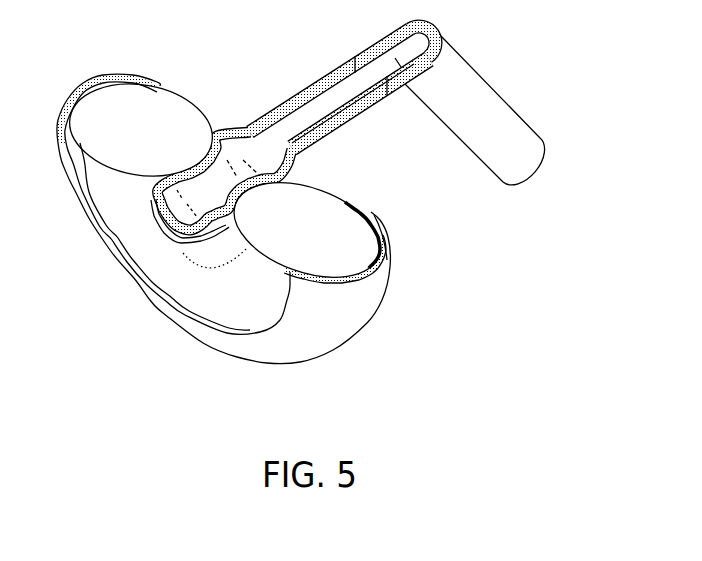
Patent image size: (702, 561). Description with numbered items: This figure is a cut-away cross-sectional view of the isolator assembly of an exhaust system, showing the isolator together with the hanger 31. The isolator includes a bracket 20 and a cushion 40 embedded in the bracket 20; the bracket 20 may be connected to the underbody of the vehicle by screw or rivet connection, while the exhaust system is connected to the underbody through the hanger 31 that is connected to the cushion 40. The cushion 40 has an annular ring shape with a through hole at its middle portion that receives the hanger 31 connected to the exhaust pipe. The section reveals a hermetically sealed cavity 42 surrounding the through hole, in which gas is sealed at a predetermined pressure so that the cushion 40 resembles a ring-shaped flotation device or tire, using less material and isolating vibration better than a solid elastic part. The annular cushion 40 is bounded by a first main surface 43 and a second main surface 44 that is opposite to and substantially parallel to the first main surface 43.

The bracket 20 is at (352, 317).
The hanger 31 is at (480, 102).
The cushion 40 is at (220, 303).
The hermetically sealed cavity 42 is at (153, 124).
The first main surface 43 is at (155, 235).
The second main surface 44 is at (338, 200).